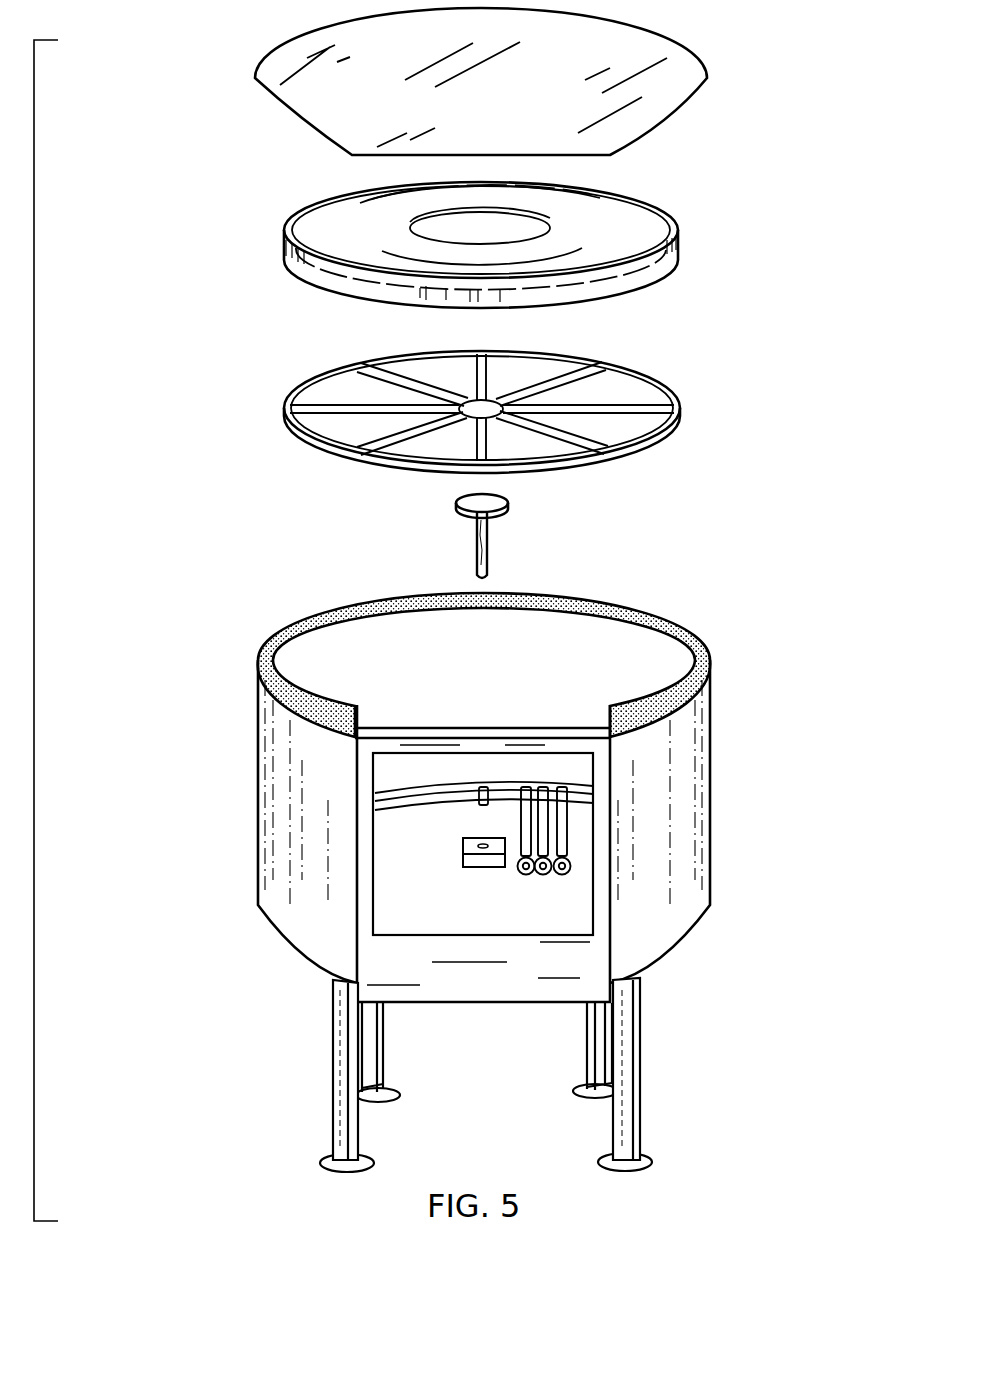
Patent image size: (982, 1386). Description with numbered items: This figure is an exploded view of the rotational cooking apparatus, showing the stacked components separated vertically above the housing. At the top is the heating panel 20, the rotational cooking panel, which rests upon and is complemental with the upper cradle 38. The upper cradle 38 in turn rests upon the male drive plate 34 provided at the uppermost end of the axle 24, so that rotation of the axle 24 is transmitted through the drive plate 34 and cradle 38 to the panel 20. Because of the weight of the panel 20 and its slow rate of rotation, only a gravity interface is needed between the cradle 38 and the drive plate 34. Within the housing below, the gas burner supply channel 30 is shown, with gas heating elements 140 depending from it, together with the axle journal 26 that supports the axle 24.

The heating panel 20 is at (333, 232).
The upper cradle 38 is at (682, 407).
The male drive plate 34 is at (507, 507).
The axle 24 is at (488, 561).
The gas burner supply channel 30 is at (593, 785).
The gas heating elements 140 is at (570, 838).
The axle journal 26 is at (505, 863).